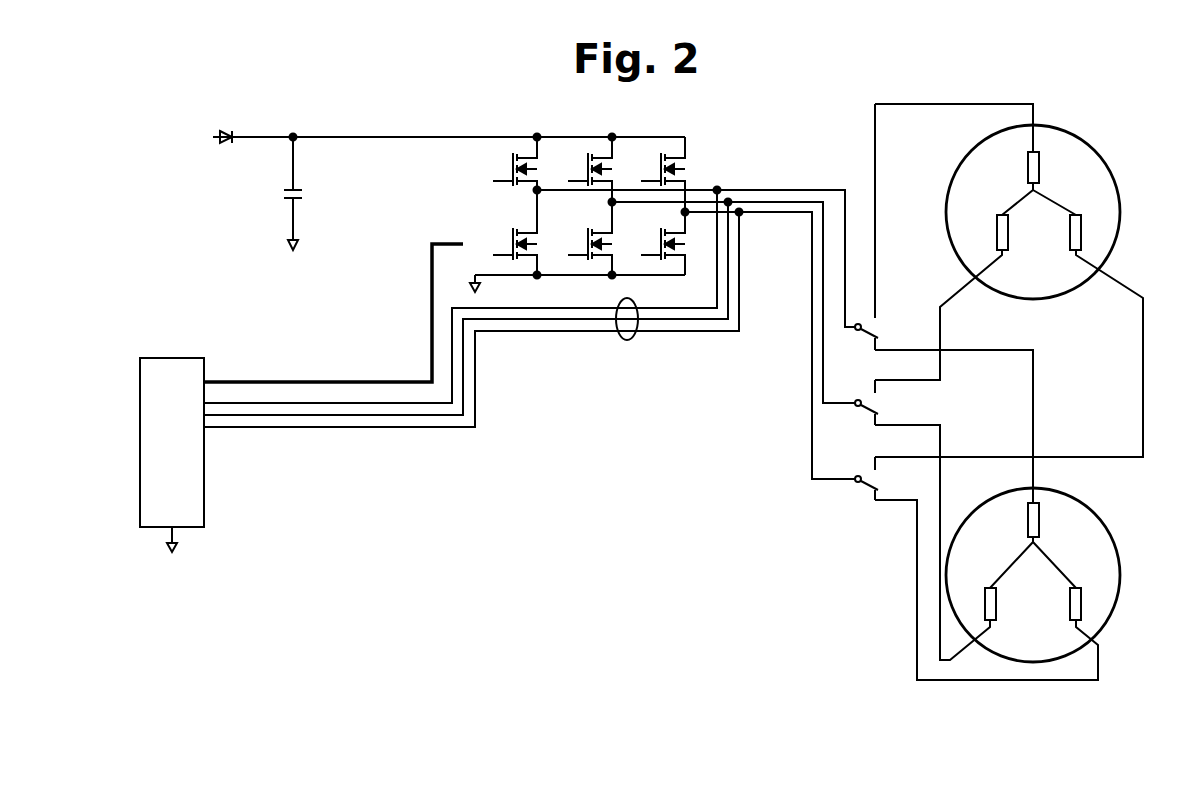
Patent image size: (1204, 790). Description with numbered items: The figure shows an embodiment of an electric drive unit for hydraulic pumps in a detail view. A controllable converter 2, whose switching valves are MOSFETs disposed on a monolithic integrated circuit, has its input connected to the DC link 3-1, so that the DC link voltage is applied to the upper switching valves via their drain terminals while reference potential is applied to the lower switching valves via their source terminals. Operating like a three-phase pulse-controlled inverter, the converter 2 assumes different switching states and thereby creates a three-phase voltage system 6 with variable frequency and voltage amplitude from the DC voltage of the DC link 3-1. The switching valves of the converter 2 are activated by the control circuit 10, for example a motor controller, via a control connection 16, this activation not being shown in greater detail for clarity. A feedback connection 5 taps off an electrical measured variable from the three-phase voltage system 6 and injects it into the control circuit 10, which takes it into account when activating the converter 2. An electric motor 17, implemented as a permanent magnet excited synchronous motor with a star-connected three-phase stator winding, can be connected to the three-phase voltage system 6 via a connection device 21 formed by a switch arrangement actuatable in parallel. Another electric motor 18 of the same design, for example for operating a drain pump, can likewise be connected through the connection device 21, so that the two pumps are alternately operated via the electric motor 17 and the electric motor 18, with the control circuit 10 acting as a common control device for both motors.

The controllable converter 2 is at (684, 168).
The DC link 3-1 is at (373, 139).
The feedback connection 5 is at (633, 341).
The 3-phase voltage system 6 is at (788, 189).
The control circuit 10 is at (185, 481).
The control connection 16 is at (306, 378).
The electric motor 17 is at (1097, 146).
The electric motor 18 is at (1110, 531).
The connection device 21 is at (862, 487).